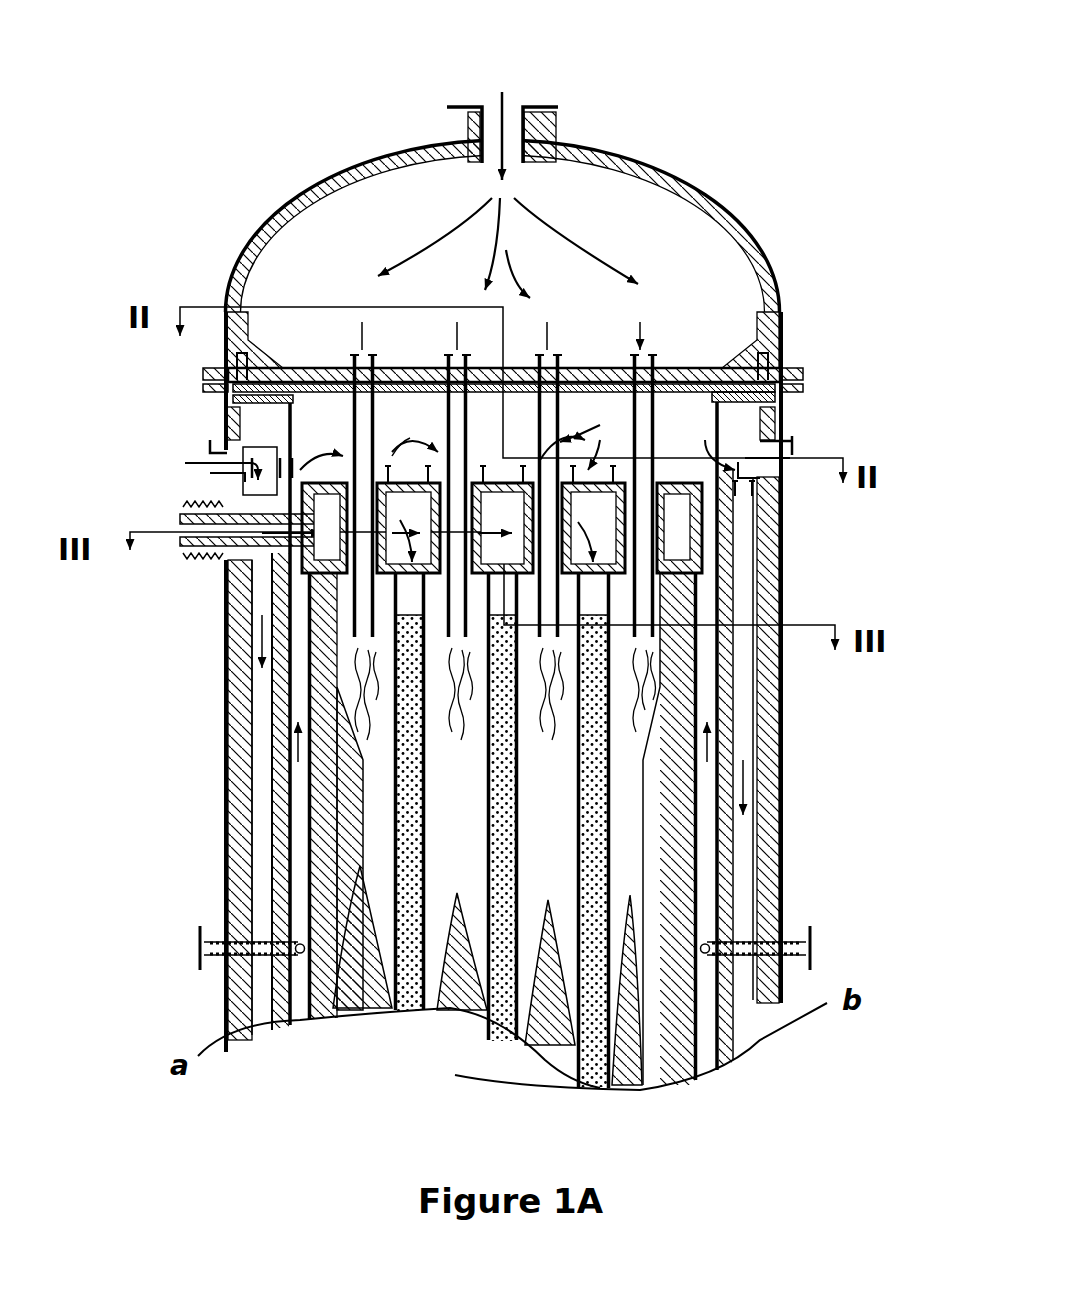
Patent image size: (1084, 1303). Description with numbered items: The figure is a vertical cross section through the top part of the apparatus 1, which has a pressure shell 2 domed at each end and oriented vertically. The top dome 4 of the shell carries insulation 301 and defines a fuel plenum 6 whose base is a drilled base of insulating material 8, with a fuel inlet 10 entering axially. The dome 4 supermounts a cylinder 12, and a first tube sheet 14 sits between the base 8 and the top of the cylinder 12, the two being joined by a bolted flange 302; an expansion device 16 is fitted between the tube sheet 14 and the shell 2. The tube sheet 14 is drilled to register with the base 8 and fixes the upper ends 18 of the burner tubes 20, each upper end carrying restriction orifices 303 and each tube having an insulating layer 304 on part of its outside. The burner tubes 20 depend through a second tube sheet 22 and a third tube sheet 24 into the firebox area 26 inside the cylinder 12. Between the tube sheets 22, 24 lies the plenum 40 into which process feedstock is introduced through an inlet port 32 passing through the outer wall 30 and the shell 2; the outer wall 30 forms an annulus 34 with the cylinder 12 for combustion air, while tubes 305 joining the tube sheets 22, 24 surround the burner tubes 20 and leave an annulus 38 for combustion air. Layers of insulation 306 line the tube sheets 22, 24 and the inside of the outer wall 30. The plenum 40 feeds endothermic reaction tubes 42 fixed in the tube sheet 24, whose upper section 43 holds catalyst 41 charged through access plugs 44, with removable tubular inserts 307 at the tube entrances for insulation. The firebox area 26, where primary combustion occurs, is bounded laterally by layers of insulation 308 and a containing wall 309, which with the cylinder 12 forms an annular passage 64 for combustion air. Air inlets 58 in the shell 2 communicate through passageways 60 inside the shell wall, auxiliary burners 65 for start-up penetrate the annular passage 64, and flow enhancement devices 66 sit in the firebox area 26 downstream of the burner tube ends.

The apparatus 1 is at (790, 338).
The pressure shell 2 is at (790, 795).
The top dome 4 is at (712, 205).
The fuel plenum 6 is at (564, 288).
The drilled base of insulating material 8 is at (700, 375).
The fuel inlet 10 is at (534, 122).
The cylinder 12 is at (720, 745).
The first tube sheet 14 is at (330, 380).
The expansion device 16 is at (212, 374).
The upper ends of burner tubes 18 is at (560, 357).
The burner tubes 20 is at (392, 648).
The second tube sheet 22 is at (700, 500).
The third tube sheet 24 is at (700, 665).
The firebox area 26 is at (468, 816).
The outer wall of plenum 30 is at (195, 496).
The inlet port 32 is at (268, 548).
The annulus 34 is at (706, 567).
The annulus 38 is at (462, 470).
The plenum 40 is at (463, 519).
The catalyst 41 is at (612, 860).
The endothermic reaction tubes 42 is at (348, 940).
The upper section 43 is at (492, 690).
The access plugs 44 is at (570, 446).
The air inlets 58 is at (790, 454).
The passageways 60 is at (745, 850).
The annular passage 64 is at (290, 885).
The auxiliary burners 65 is at (735, 945).
The flow enhancement devices 66 is at (462, 1010).
The insulation 301 is at (647, 175).
The bolted flange 302 is at (790, 408).
The restriction orifices 303 is at (455, 350).
The insulating layer 304 is at (262, 432).
The tubes 305 is at (292, 565).
The layers of insulation 306 is at (690, 515).
The removable tubular inserts 307 is at (292, 640).
The layers of insulation 308 is at (340, 790).
The containing wall 309 is at (330, 840).